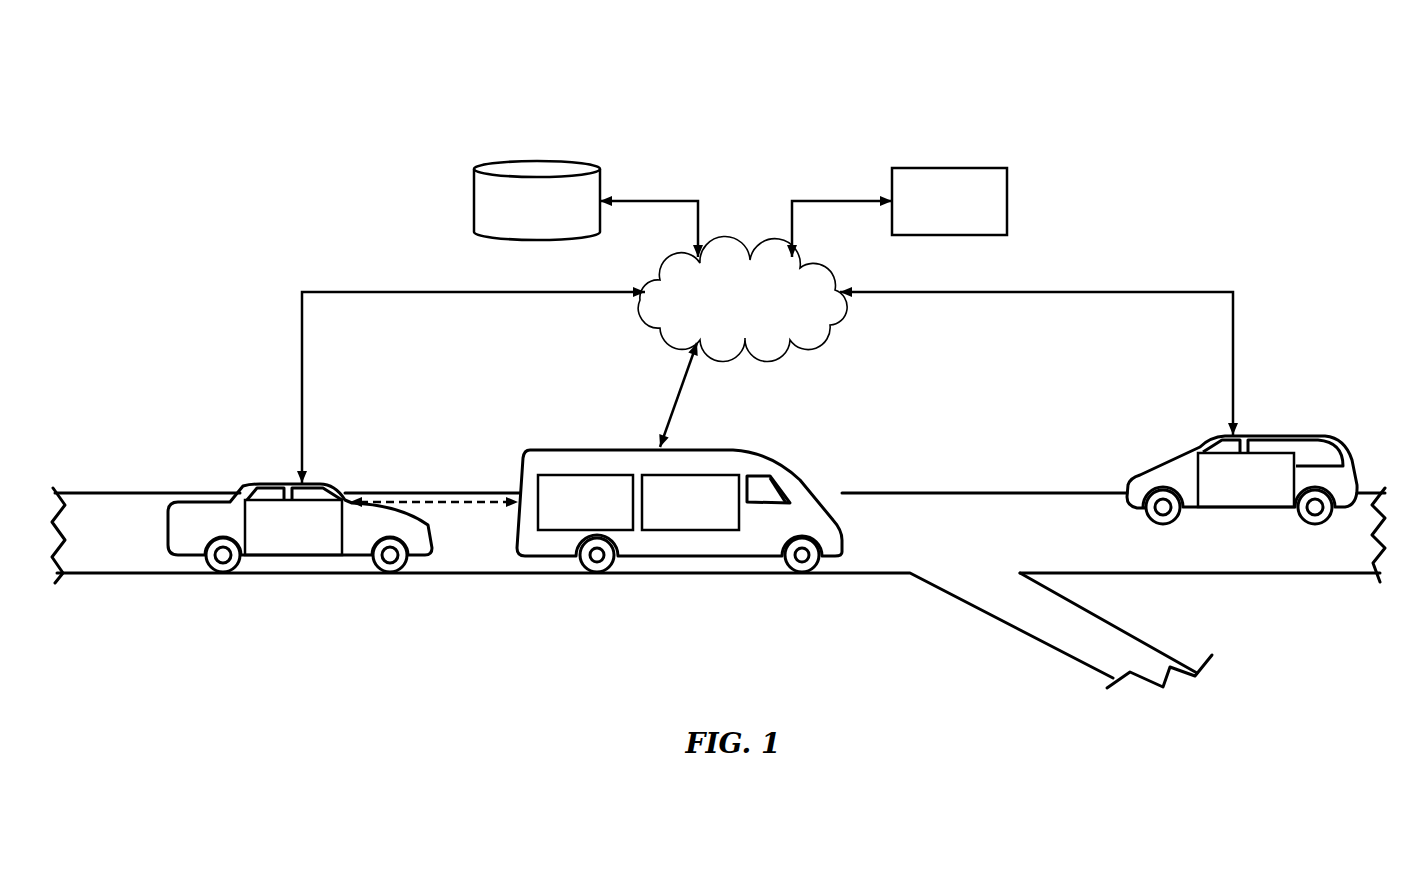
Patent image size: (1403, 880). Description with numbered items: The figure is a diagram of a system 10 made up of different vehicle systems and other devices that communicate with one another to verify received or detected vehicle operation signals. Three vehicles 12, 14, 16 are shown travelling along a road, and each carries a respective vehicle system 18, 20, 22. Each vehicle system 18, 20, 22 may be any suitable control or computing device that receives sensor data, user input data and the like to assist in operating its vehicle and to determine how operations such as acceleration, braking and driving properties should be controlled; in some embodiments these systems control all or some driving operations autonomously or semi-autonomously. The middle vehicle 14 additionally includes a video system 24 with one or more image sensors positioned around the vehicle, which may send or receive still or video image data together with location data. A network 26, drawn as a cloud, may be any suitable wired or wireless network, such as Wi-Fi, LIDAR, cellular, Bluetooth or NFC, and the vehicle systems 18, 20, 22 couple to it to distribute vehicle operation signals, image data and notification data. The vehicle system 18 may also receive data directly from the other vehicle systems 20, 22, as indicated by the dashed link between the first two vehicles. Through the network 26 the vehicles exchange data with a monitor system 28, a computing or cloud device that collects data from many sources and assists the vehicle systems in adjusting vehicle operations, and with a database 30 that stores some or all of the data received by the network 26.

The system 10 is at (1060, 70).
The vehicle 12 is at (300, 535).
The vehicle 14 is at (679, 511).
The vehicle 16 is at (1242, 485).
The vehicle system 18 is at (343, 528).
The vehicle system 20 is at (690, 530).
The vehicle system 22 is at (1297, 478).
The video system 24 is at (592, 530).
The network 26 is at (752, 343).
The monitor system 28 is at (950, 168).
The database 30 is at (538, 160).